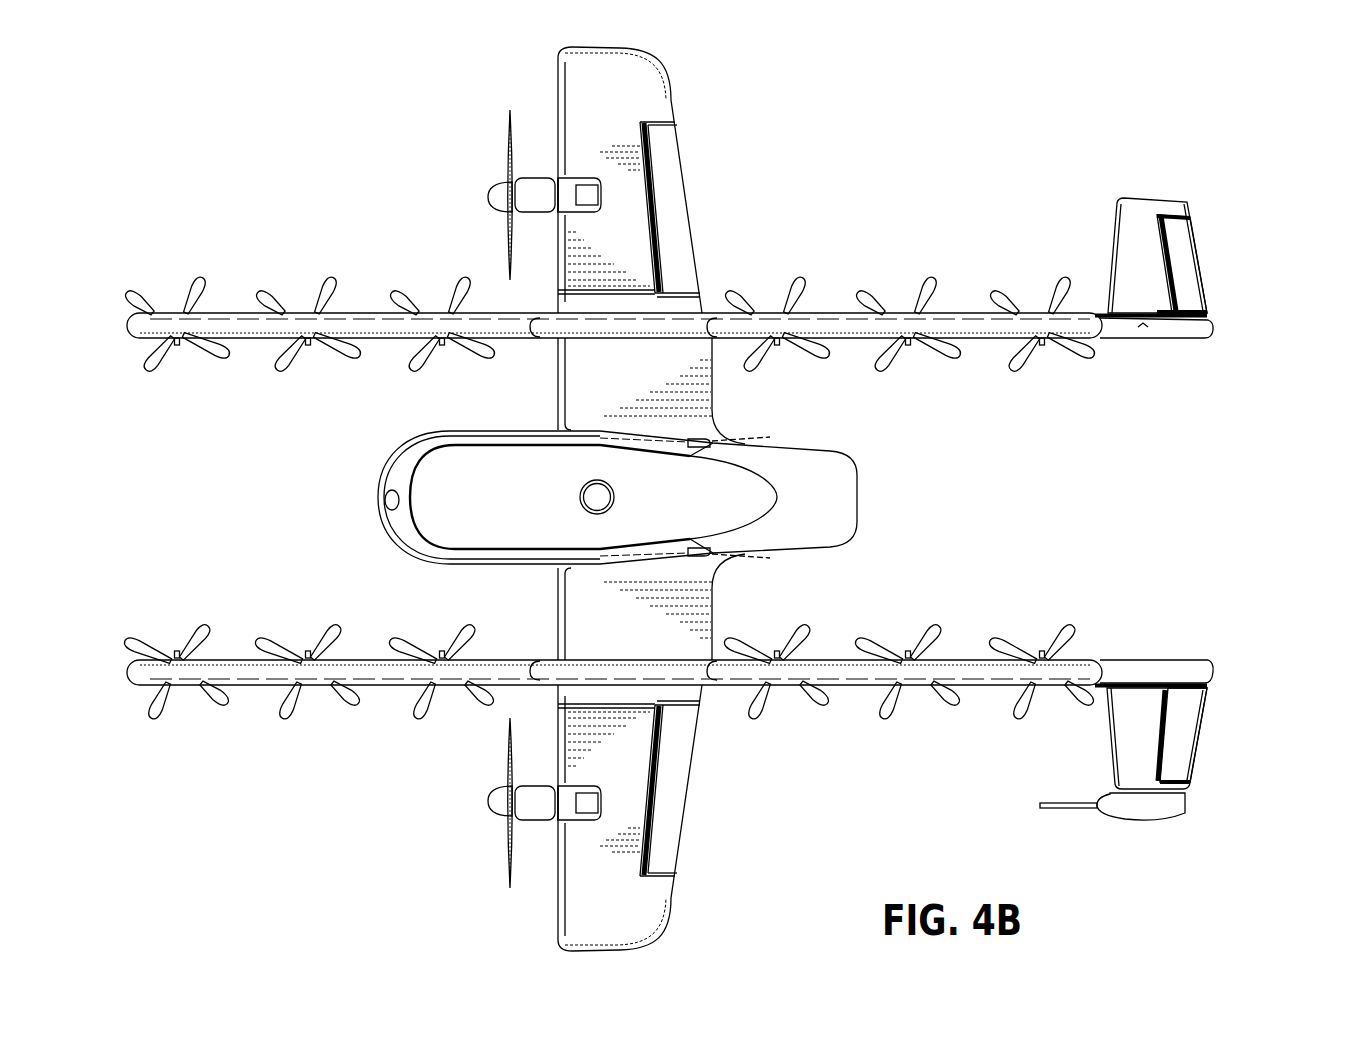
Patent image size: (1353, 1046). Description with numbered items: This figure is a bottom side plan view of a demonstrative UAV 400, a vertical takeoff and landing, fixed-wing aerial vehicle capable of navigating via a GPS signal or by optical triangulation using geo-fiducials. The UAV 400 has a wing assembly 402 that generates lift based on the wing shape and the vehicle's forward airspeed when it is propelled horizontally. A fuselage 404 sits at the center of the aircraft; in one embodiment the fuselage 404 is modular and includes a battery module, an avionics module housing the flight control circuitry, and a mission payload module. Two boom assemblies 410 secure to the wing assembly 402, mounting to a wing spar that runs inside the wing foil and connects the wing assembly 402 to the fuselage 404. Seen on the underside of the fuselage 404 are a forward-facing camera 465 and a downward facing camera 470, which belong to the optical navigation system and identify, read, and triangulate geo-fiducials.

The UAV 400 is at (718, 499).
The wing assembly 402 is at (630, 248).
The fuselage 404 is at (878, 500).
The boom assemblies 410 is at (1229, 342).
The forward-facing camera 465 is at (390, 497).
The downward facing camera 470 is at (585, 496).